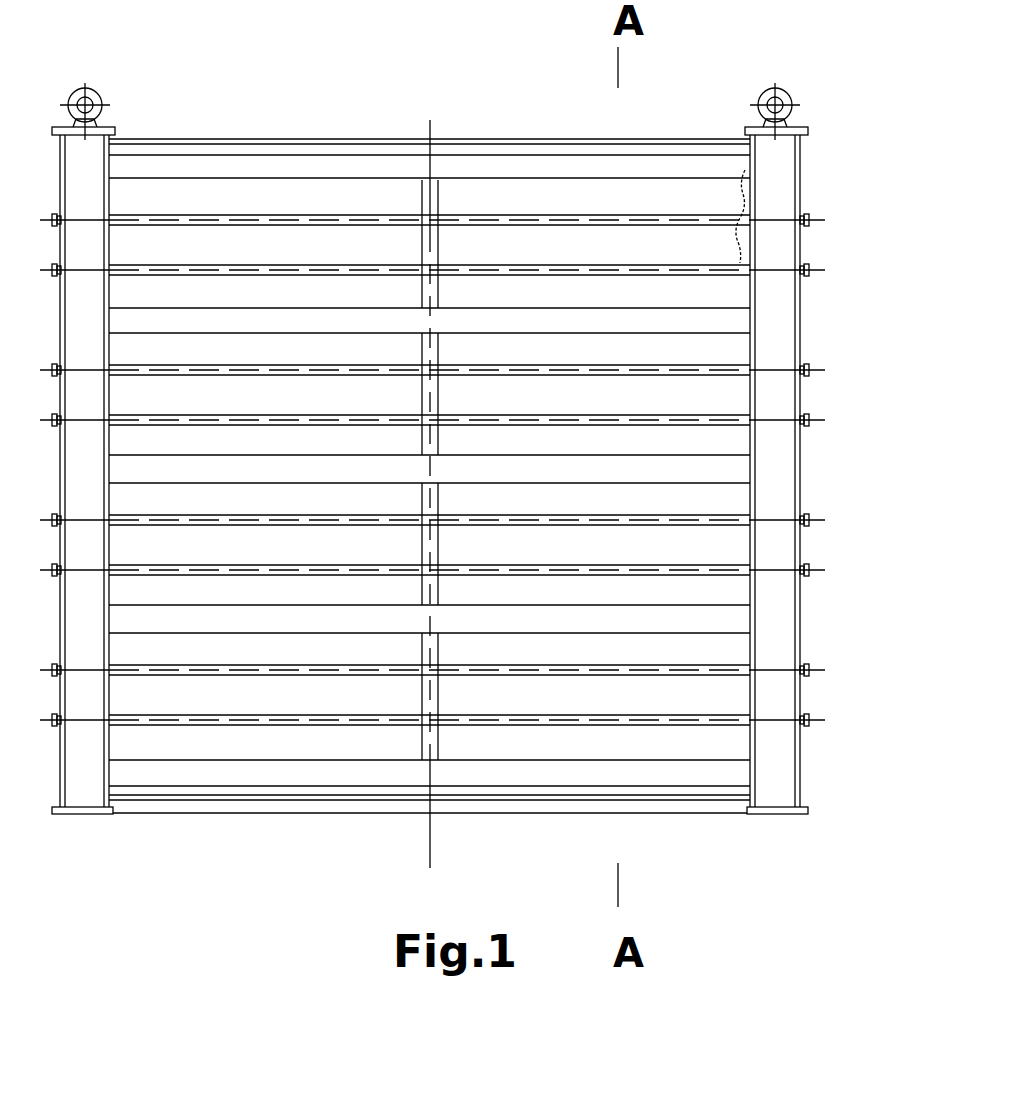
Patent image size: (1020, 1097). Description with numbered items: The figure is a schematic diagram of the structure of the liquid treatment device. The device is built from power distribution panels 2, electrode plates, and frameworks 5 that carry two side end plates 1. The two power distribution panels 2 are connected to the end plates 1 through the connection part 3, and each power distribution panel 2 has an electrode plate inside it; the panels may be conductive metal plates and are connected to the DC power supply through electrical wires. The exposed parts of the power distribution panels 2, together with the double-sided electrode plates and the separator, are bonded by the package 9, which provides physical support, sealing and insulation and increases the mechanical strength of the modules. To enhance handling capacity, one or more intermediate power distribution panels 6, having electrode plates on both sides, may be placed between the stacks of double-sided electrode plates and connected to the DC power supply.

The side plate 1 is at (772, 160).
The power distribution panel 2 is at (745, 235).
The connection part 3 is at (725, 272).
The package 9 is at (695, 357).
The framework 5 is at (638, 472).
The intermediate power distribution panel 6 is at (430, 555).